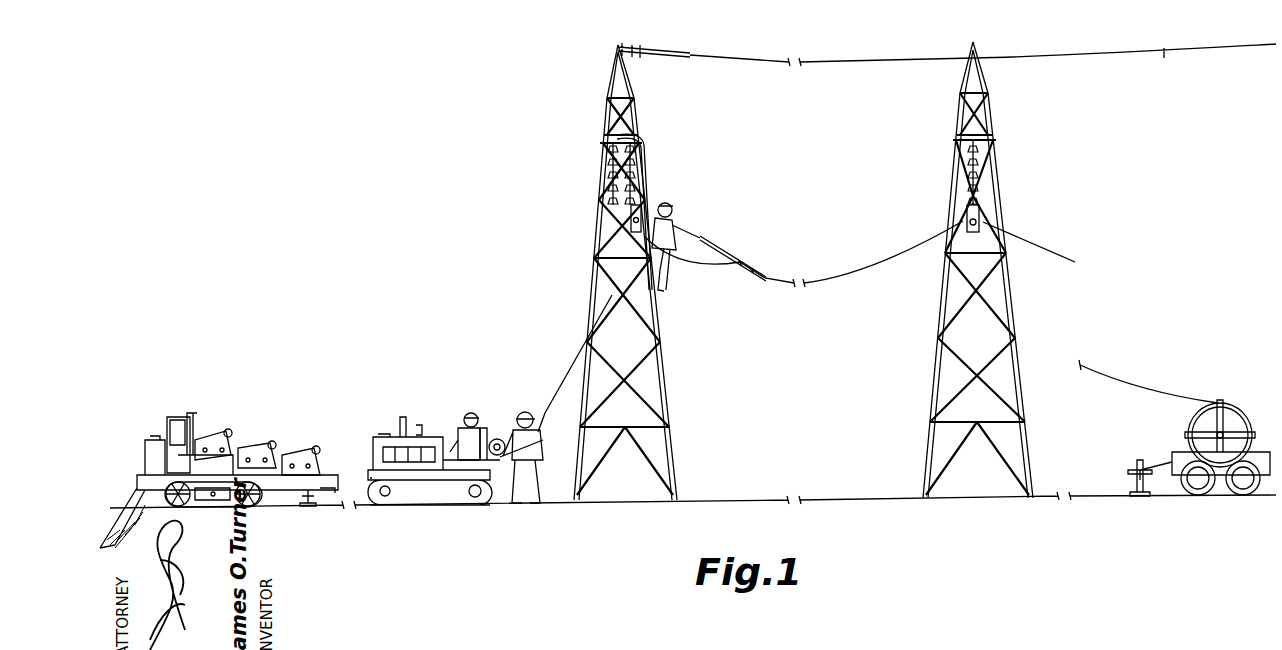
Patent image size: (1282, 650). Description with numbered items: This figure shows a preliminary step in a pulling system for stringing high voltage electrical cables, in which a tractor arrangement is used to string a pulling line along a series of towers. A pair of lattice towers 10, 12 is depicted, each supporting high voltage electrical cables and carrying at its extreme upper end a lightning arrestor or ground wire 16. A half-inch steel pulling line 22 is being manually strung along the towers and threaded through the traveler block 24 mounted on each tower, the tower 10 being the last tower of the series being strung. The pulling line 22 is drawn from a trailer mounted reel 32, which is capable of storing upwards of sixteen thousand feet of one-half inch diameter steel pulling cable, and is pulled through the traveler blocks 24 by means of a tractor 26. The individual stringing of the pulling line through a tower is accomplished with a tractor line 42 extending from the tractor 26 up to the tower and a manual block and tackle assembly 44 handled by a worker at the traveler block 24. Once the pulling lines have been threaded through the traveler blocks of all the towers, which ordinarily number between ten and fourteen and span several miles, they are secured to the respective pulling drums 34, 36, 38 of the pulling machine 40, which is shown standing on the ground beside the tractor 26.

The tower 10 is at (608, 79).
The tower 12 is at (958, 108).
The ground wire 16 is at (864, 62).
The pulling line 22 is at (872, 261).
The traveler block 24 is at (658, 212).
The tractor 26 is at (408, 432).
The trailer mounted reel 32 is at (1222, 402).
The pulling drum 34 is at (200, 432).
The pulling drum 36 is at (248, 445).
The pulling drum 38 is at (292, 452).
The pulling machine 40 is at (167, 420).
The tractor line 42 is at (568, 375).
The manual block and tackle assembly 44 is at (740, 266).